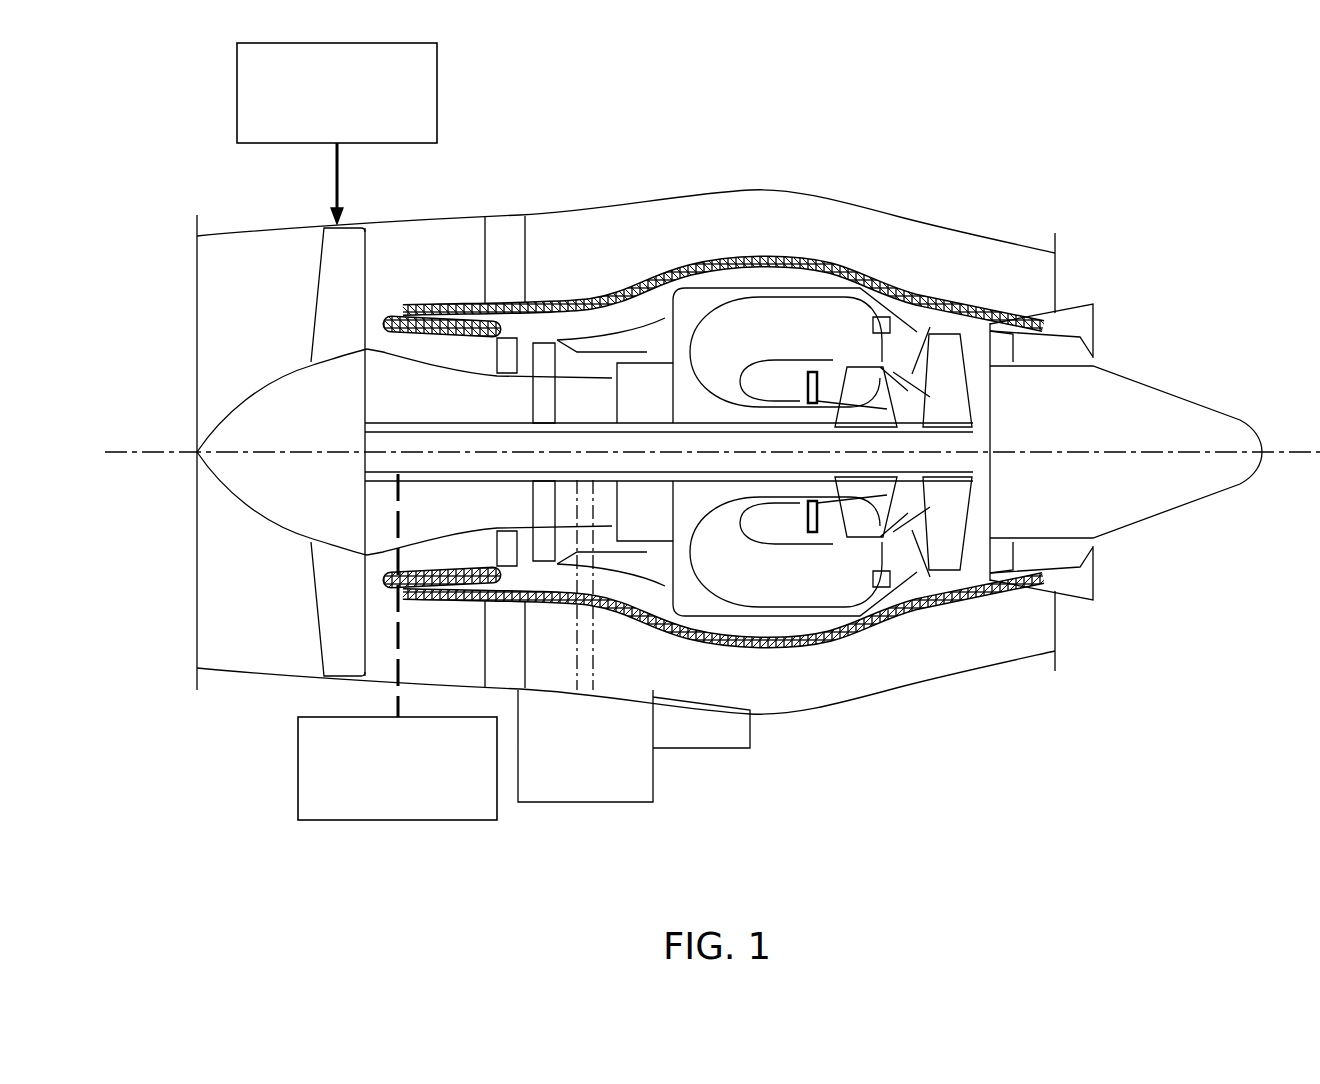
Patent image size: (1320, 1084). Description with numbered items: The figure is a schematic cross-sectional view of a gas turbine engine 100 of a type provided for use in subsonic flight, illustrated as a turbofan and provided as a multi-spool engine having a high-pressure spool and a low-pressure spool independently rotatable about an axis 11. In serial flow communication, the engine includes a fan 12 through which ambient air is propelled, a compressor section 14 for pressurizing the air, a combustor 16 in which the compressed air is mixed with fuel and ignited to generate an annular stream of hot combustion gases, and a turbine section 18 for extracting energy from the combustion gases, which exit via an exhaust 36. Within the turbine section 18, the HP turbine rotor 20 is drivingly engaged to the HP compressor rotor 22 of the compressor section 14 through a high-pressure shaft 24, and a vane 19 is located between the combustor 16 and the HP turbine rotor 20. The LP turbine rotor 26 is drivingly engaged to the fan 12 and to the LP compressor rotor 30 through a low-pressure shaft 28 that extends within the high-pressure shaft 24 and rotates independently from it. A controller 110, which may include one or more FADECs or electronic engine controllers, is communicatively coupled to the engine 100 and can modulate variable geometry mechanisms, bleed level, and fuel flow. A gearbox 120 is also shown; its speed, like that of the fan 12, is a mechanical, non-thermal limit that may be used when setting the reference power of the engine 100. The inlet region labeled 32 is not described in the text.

The gas turbine engine 100 is at (962, 185).
The axis 11 is at (1296, 452).
The fan 12 is at (335, 597).
The compressor section 14 is at (577, 363).
The combustor 16 is at (783, 320).
The turbine section 18 is at (908, 513).
The vane 19 is at (813, 372).
The HP turbine rotor 20 is at (865, 396).
The HP compressor rotor 22 is at (648, 383).
The high-pressure shaft 24 is at (733, 420).
The LP turbine rotor 26 is at (950, 355).
The low-pressure shaft 28 is at (452, 428).
The LP compressor rotor 30 is at (542, 360).
The inlet 32 is at (207, 348).
The exhaust 36 is at (1093, 355).
The controller 110 is at (312, 133).
The gearbox 120 is at (370, 807).